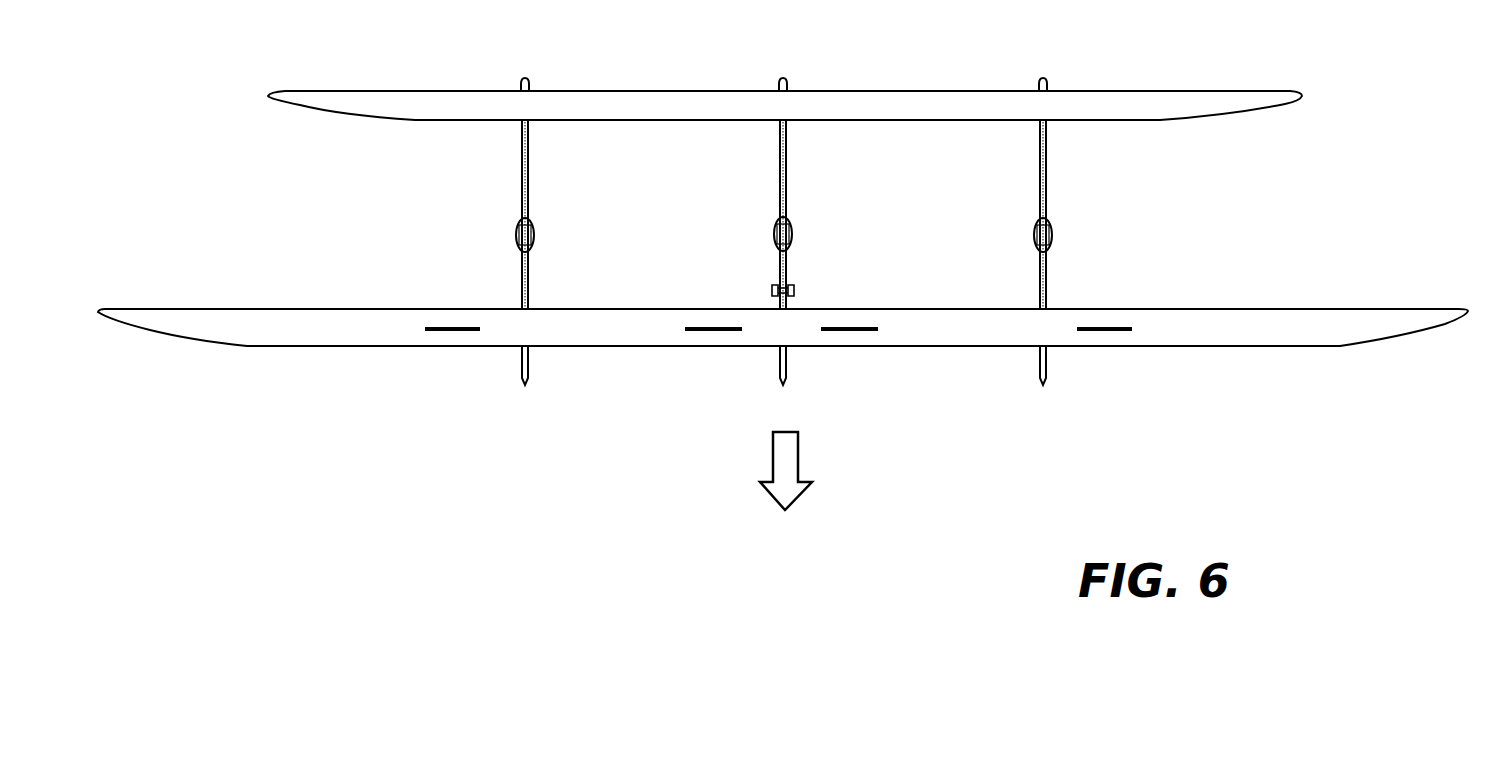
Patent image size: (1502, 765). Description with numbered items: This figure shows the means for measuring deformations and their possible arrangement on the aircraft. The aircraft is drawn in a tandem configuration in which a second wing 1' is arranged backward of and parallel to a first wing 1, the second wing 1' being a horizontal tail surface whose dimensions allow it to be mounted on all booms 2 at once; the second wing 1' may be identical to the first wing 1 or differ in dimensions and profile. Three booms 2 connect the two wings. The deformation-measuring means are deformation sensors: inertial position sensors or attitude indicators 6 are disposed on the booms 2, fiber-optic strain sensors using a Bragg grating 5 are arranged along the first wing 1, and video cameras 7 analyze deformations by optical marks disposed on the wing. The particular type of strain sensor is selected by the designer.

The second wing 1' is at (785, 70).
The first wing 1 is at (783, 296).
The boom 2 is at (540, 172).
The fiber-optic strain sensor using a Bragg grating 5 is at (480, 352).
The inertial position sensor or attitude indicator 6 is at (536, 236).
The video camera 7 is at (752, 281).